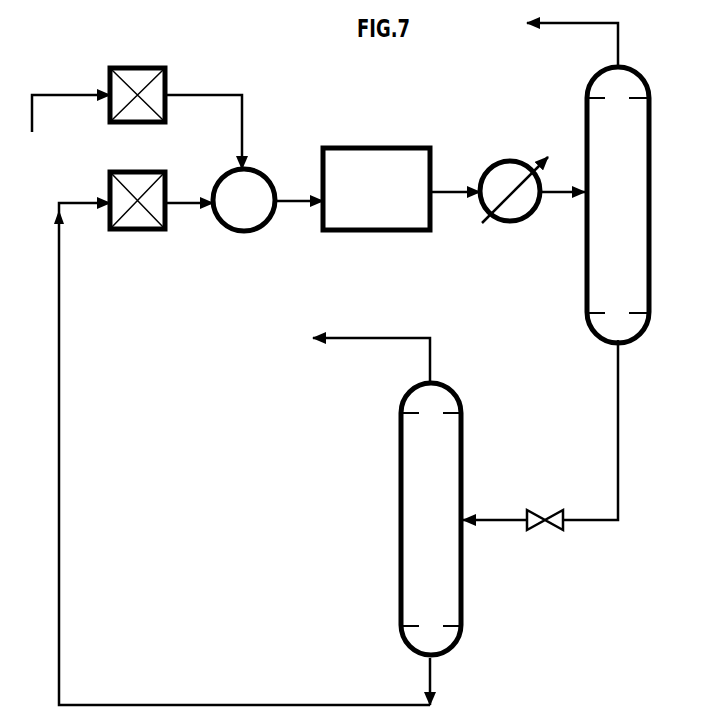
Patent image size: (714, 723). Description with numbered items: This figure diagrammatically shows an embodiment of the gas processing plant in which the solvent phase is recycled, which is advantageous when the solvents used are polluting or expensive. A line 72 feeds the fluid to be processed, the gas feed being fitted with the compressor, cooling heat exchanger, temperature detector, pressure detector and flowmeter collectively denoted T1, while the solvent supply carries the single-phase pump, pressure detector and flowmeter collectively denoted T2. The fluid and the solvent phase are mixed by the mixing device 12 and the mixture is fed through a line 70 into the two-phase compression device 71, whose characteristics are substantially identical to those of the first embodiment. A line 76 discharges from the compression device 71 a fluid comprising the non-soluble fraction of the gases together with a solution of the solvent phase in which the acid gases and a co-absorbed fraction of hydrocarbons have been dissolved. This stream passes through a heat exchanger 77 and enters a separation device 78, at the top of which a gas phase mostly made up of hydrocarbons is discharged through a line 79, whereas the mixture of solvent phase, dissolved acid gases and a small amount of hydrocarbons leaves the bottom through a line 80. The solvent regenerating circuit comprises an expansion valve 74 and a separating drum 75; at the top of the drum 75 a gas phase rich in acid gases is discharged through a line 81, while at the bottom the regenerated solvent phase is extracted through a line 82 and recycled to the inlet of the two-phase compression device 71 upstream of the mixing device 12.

The line for feeding a fluid to be processed 72 is at (68, 97).
The gas feed line elements T1 is at (172, 72).
The solvent feed line elements T2 is at (167, 238).
The mixing device 12 is at (257, 232).
The line 70 is at (295, 202).
The two-phase compression device 71 is at (382, 206).
The discharge line 76 is at (460, 189).
The heat exchanger 77 is at (529, 158).
The separation device 78 is at (630, 208).
The line 79 is at (568, 24).
The line 80 is at (618, 455).
The expansion valve 74 is at (552, 511).
The separating drum 75 is at (437, 533).
The line 81 is at (371, 333).
The line for delivering a regenerated solvent phase 82 is at (278, 704).